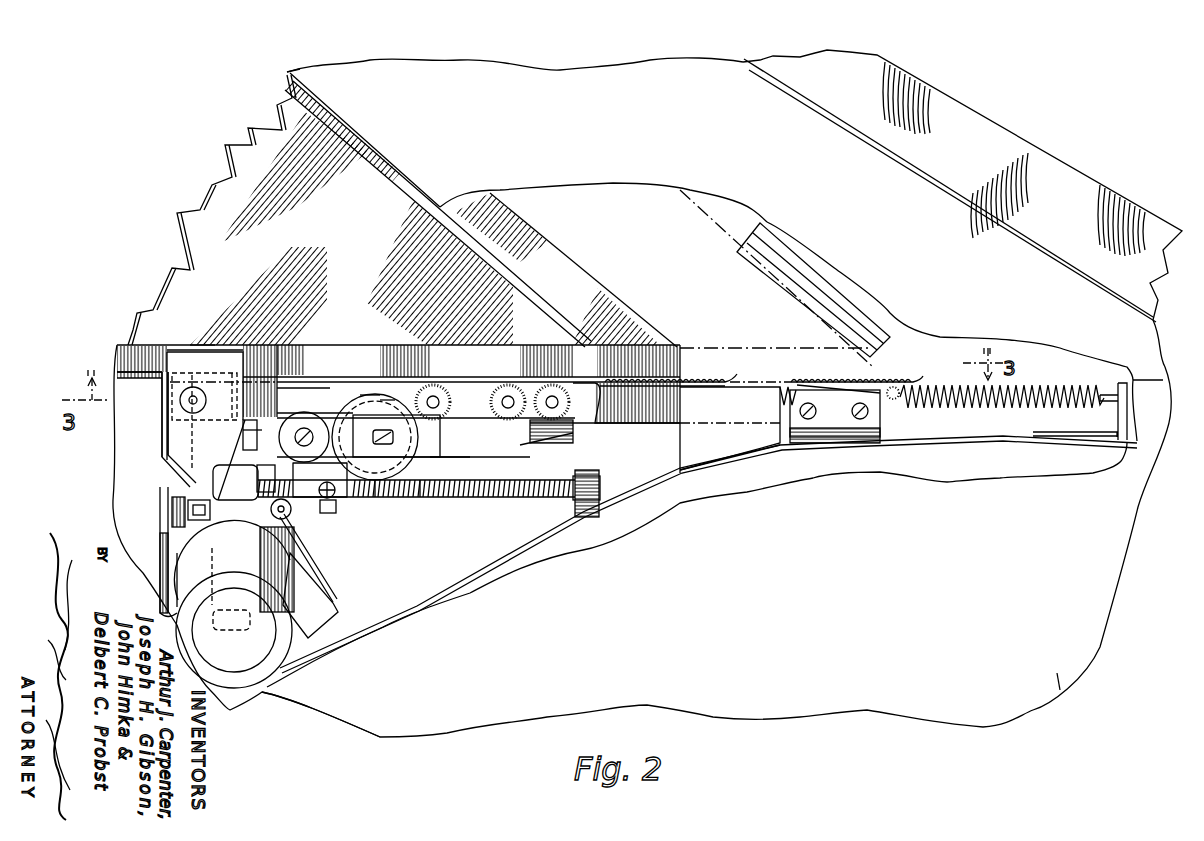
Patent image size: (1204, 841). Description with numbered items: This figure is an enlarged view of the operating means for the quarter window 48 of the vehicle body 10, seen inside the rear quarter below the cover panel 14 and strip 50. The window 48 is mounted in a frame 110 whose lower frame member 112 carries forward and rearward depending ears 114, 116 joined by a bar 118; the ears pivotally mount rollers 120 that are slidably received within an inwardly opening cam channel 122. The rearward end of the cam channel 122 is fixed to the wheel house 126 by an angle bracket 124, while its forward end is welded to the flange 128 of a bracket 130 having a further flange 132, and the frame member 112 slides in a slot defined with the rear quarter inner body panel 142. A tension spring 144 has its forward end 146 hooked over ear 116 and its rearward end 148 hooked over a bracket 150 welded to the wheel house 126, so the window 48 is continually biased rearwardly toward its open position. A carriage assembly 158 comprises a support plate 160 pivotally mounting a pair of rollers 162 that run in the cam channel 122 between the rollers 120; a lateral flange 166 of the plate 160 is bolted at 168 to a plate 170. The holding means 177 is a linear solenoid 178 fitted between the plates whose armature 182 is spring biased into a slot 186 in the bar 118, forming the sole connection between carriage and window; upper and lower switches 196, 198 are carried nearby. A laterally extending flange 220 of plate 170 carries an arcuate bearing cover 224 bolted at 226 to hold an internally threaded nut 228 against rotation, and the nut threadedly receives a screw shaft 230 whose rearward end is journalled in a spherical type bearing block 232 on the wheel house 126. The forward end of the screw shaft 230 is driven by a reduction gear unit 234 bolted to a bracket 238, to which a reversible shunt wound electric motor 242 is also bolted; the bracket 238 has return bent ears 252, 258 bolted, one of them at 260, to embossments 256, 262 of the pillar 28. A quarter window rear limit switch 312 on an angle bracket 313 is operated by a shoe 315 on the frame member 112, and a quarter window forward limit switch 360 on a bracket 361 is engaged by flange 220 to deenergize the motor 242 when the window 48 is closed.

The sewing machine 10 is at (590, 60).
The cover plate 14 is at (1027, 143).
The pillar 28 is at (162, 416).
The window 48 is at (277, 130).
The guide strip 50 is at (913, 177).
The frame 110 is at (587, 283).
The lower frame member 112 is at (426, 423).
The forward depending ear 114 is at (160, 446).
The rearward depending ear 116 is at (575, 425).
The bar 118 is at (255, 447).
The rollers 120 is at (240, 363).
The cam channel 122 is at (278, 345).
The angle bracket 124 is at (727, 445).
The wheel house 126 is at (947, 443).
The flange 128 is at (193, 348).
The bracket 130 is at (190, 348).
The flange 132 is at (152, 362).
The rear quarter inner body panel 142 is at (1056, 673).
The tension spring 144 is at (950, 384).
The forward end 146 is at (540, 390).
The rearward end 148 is at (1144, 388).
The bracket 150 is at (1078, 438).
The carriage assembly 158 is at (478, 469).
The support plate 160 is at (487, 392).
The rollers 162 is at (527, 387).
The lateral flange 166 is at (297, 388).
The bolt 168 is at (372, 416).
The plate 170 is at (422, 493).
The holding means 177 is at (373, 385).
The linear solenoid 178 is at (387, 400).
The armature 182 is at (380, 438).
The slot 186 is at (387, 433).
The upper switch 196 is at (265, 430).
The lower switch 198 is at (258, 434).
The laterally extending flange 220 is at (382, 515).
The arcuate bearing cover 224 is at (290, 516).
The bolt 226 is at (330, 512).
The internally threaded nut 228 is at (342, 512).
The screw shaft 230 is at (455, 497).
The spherical type bearing block 232 is at (584, 500).
The reduction gear unit 234 is at (238, 473).
The bracket 238 is at (220, 468).
The reversible shunt wound electric motor 242 is at (287, 668).
The return bent ear 252 is at (195, 590).
The embossment 256 is at (172, 575).
The return bent ear 258 is at (228, 513).
The bolt 260 is at (180, 510).
The embossment 262 is at (172, 498).
The quarter window rear limit switch 312 is at (873, 419).
The angle bracket 313 is at (837, 437).
The shoe 315 is at (707, 377).
The quarter window forward limit switch 360 is at (318, 592).
The bracket 361 is at (322, 656).